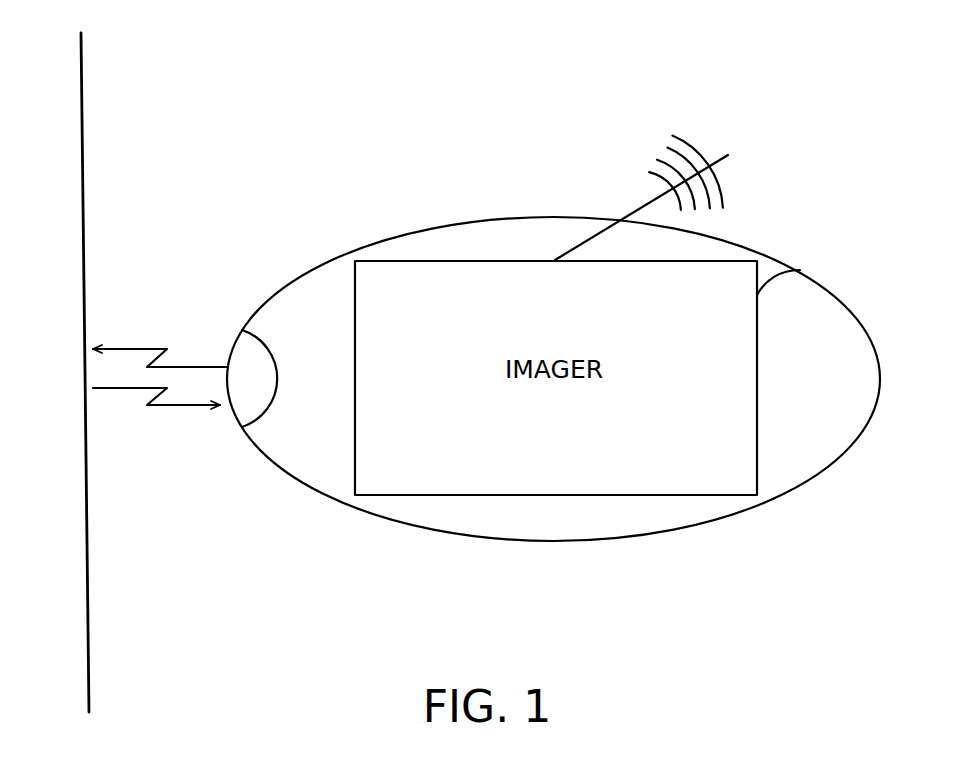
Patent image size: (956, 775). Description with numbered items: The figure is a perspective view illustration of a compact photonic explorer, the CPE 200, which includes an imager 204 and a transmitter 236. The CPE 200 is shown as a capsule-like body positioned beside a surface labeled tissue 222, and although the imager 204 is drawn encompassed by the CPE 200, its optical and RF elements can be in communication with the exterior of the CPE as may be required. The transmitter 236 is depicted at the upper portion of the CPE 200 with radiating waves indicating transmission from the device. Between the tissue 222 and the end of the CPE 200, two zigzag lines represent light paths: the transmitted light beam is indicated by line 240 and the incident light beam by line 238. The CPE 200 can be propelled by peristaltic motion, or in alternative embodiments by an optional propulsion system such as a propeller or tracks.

The compact photonic explorer 200 is at (421, 110).
The imager 204 is at (800, 270).
The tissue 222 is at (85, 278).
The transmitter 236 is at (627, 212).
The incident light beam 238 is at (180, 407).
The transmitted light beam 240 is at (147, 348).